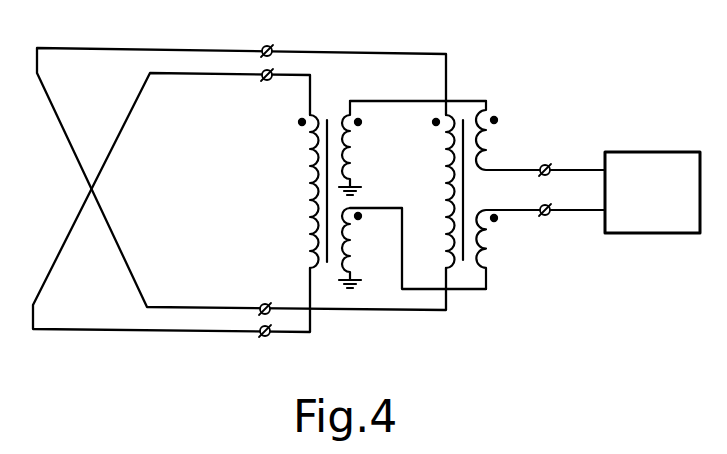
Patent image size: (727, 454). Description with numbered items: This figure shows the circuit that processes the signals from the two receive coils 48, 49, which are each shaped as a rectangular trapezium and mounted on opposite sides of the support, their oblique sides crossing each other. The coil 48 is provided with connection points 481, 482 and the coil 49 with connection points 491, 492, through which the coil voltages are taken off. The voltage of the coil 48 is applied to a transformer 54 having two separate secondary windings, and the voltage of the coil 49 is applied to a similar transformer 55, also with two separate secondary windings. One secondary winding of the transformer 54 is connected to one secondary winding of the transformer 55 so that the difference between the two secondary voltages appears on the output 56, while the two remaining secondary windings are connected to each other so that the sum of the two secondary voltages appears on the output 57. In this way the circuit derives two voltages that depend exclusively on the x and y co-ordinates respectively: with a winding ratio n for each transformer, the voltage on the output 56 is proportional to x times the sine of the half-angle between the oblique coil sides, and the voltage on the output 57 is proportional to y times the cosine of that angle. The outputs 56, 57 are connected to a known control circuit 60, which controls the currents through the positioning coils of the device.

The receive coil 48 is at (76, 153).
The receive coil 49 is at (124, 249).
The connection point 481 is at (262, 306).
The connection point 482 is at (272, 46).
The connection point 491 is at (268, 338).
The connection point 492 is at (271, 81).
The transformer 54 is at (327, 262).
The transformer 55 is at (463, 260).
The output 56 is at (549, 161).
The output 57 is at (549, 218).
The control circuit 60 is at (658, 152).